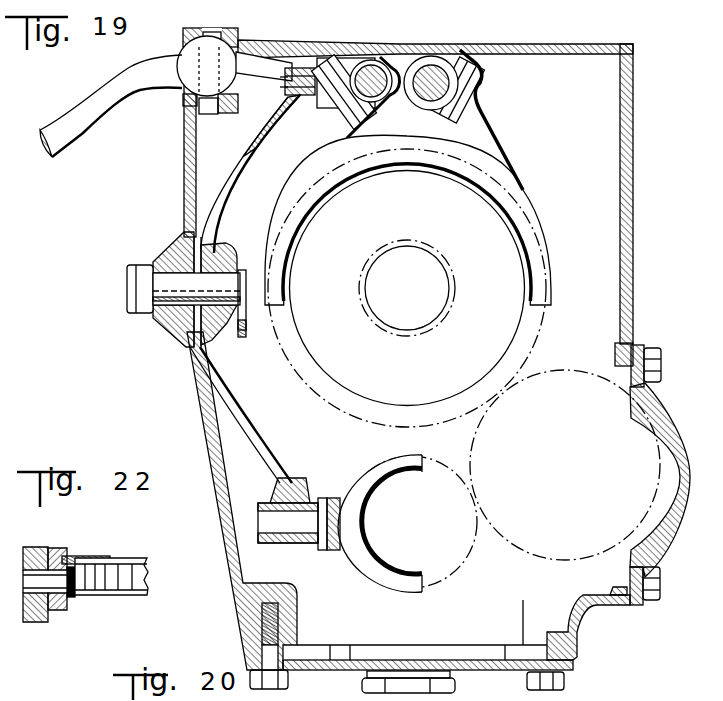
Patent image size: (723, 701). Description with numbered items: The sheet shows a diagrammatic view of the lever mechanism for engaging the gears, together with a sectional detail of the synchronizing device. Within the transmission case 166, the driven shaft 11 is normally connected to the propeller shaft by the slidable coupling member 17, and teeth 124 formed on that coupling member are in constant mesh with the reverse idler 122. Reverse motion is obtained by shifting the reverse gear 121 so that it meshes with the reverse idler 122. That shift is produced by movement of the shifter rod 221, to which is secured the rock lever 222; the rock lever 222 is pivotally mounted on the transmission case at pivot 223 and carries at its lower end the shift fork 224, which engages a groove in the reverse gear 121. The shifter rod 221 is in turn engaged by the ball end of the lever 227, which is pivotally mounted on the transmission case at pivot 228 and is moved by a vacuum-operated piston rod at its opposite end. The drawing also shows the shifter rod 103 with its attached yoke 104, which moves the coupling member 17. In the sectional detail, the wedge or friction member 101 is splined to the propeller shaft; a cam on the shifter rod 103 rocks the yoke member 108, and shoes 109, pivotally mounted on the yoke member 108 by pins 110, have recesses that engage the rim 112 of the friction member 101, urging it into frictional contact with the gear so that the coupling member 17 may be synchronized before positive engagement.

In FIG. 19, the driven shaft 11 is at (368, 293).
In FIG. 19, the slidable coupling member 17 is at (320, 368).
In FIG. 19, the shifter rod 103 is at (431, 70).
In FIG. 19, the yoke 104 is at (480, 144).
In FIG. 19, the reverse gear 121 is at (466, 558).
In FIG. 19, the reverse idler 122 is at (470, 444).
In FIG. 19, the teeth 124 is at (332, 408).
In FIG. 19, the transmission case 166 is at (202, 408).
In FIG. 19, the shifter rod 221 is at (368, 65).
In FIG. 19, the rock lever 222 is at (238, 173).
In FIG. 19, the pivot 223 is at (177, 277).
In FIG. 19, the shift fork 224 is at (342, 556).
In FIG. 19, the lever 227 is at (95, 122).
In FIG. 19, the pivot 228 is at (212, 32).
In FIG. 22, the wedge member 101 is at (140, 577).
In FIG. 22, the yoke member 108 is at (35, 617).
In FIG. 22, the shoes 109 is at (58, 607).
In FIG. 22, the pins 110 is at (70, 598).
In FIG. 22, the rim 112 is at (68, 561).